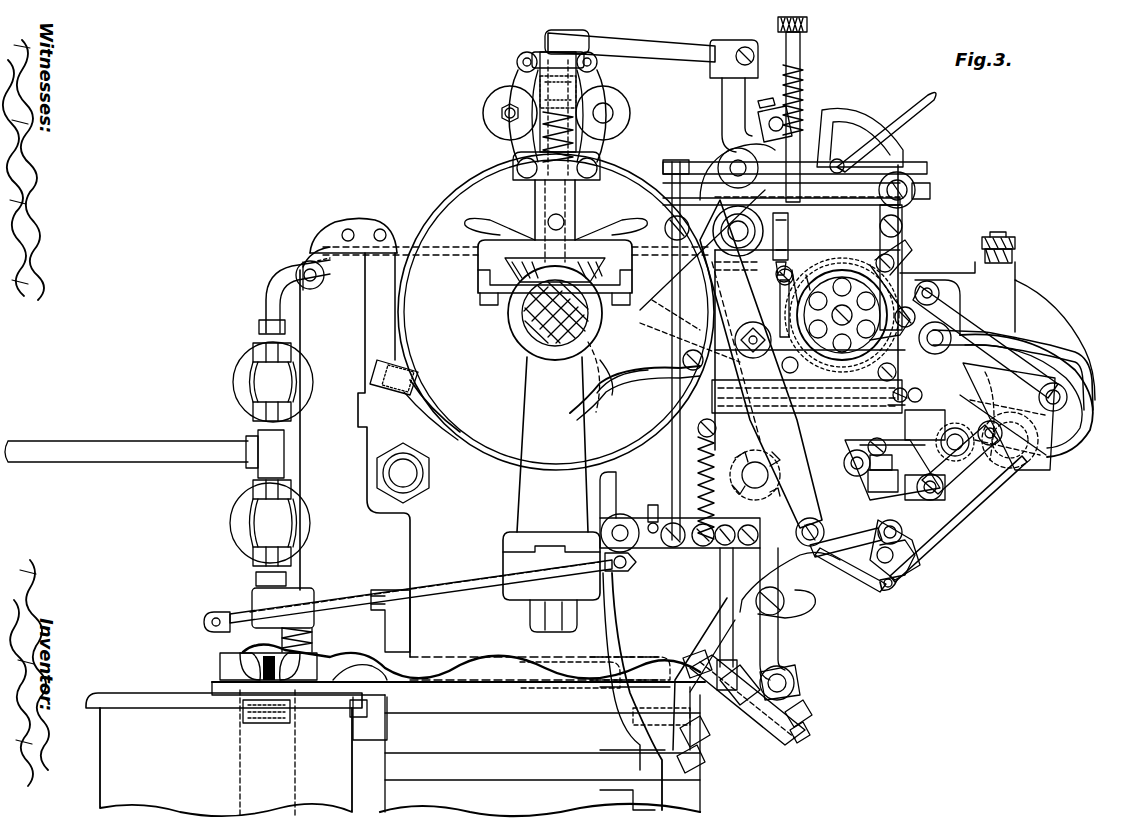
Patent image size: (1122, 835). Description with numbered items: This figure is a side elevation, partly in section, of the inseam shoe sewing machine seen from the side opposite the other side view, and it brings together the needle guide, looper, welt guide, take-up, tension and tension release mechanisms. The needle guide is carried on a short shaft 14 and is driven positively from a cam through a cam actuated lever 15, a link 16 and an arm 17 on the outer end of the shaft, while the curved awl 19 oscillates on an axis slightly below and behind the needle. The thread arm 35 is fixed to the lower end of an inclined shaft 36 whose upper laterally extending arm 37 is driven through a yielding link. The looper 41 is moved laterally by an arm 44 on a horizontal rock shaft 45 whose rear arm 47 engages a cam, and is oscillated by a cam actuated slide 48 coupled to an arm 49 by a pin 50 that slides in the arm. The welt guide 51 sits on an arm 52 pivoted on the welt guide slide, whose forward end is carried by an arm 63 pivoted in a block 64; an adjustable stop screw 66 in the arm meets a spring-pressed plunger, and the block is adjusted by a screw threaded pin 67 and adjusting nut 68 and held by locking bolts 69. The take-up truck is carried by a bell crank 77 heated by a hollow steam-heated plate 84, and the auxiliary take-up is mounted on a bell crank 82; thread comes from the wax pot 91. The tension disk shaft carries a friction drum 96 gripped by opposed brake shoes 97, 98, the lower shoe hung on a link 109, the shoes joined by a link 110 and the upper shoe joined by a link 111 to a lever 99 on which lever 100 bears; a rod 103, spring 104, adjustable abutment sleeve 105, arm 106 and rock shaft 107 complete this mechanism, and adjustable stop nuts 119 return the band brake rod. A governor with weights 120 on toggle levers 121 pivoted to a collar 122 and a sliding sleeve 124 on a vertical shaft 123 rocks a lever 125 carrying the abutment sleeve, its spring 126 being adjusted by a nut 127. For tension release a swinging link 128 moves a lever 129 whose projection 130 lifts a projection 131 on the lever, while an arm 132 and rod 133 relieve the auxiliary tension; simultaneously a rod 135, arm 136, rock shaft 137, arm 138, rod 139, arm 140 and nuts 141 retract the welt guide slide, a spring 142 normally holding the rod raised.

The short shaft 14 is at (880, 568).
The cam actuated lever 15 is at (768, 430).
The link 16 is at (816, 525).
The arm 17 is at (900, 588).
The awl 19 is at (920, 572).
The thread arm 35 is at (836, 555).
The shaft 36 is at (806, 542).
The laterally extending arm 37 is at (846, 468).
The looper 41 is at (948, 540).
The arm 44 is at (885, 430).
The horizontal rock shaft 45 is at (860, 452).
The arm 47 is at (690, 392).
The cam actuated slide 48 is at (975, 512).
The arm 49 is at (968, 446).
The pin 50 is at (1040, 470).
The welt guide 51 is at (848, 588).
The arm 52 is at (766, 590).
The arm 63 is at (766, 640).
The block 64 is at (688, 660).
The adjustable stop screw 66 is at (803, 736).
The screw threaded pin 67 is at (677, 764).
The adjusting nut 68 is at (705, 762).
The locking bolts 69 is at (795, 694).
The bell crank 77 is at (1050, 384).
The bell crank 82 is at (1000, 392).
The hollow steam-heated plate 84 is at (1078, 436).
The wax pot 91 is at (166, 706).
The friction disk or drum 96 is at (842, 280).
The brake shoe 97 is at (822, 275).
The brake shoe 98 is at (798, 402).
The lever 99 is at (930, 196).
The lever 100 is at (880, 178).
The rod 103 is at (815, 118).
The spring 104 is at (800, 60).
The adjustable abutment sleeve 105 is at (808, 28).
The arm 106 is at (726, 158).
The rock shaft 107 is at (740, 142).
The link 109 is at (948, 340).
The link 110 is at (780, 300).
The link 111 is at (902, 250).
The adjustable stop nuts 119 is at (778, 116).
The weights 120 is at (606, 96).
The toggle levers 121 is at (520, 78).
The collar 122 is at (548, 168).
The vertical shaft 123 is at (553, 193).
The sleeve 124 is at (545, 44).
The lever 125 is at (668, 46).
The spring 126 is at (492, 120).
The adjustable nut 127 is at (556, 99).
The swinging link or arm 128 is at (608, 360).
The lever 129 is at (700, 300).
The projection 130 is at (790, 228).
The projection 131 is at (712, 224).
The arm 132 is at (712, 266).
The rod 133 is at (700, 198).
The rod 135 is at (670, 462).
The arm 136 is at (652, 520).
The rock shaft 137 is at (608, 528).
The arm 138 is at (698, 556).
The rod 139 is at (738, 596).
The arm 140 is at (745, 725).
The nuts 141 is at (775, 655).
The spring 142 is at (718, 506).